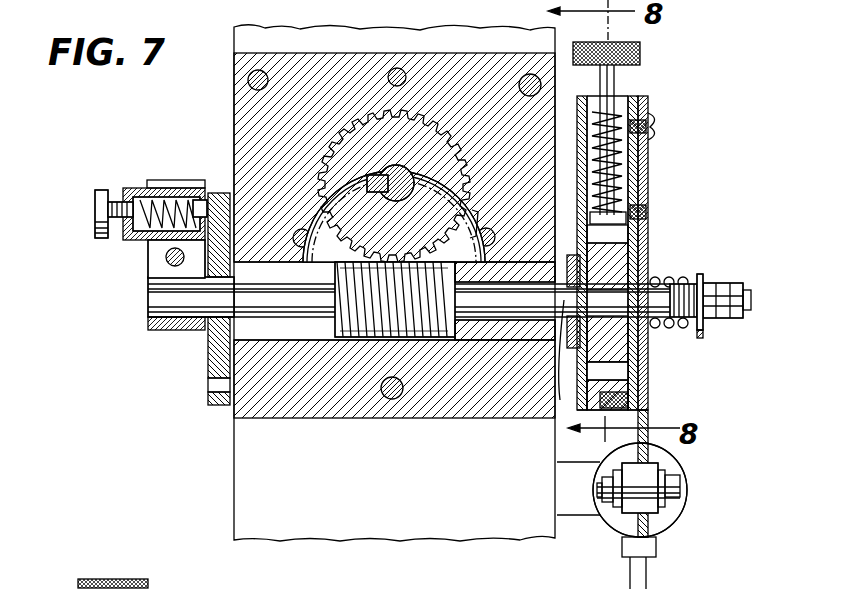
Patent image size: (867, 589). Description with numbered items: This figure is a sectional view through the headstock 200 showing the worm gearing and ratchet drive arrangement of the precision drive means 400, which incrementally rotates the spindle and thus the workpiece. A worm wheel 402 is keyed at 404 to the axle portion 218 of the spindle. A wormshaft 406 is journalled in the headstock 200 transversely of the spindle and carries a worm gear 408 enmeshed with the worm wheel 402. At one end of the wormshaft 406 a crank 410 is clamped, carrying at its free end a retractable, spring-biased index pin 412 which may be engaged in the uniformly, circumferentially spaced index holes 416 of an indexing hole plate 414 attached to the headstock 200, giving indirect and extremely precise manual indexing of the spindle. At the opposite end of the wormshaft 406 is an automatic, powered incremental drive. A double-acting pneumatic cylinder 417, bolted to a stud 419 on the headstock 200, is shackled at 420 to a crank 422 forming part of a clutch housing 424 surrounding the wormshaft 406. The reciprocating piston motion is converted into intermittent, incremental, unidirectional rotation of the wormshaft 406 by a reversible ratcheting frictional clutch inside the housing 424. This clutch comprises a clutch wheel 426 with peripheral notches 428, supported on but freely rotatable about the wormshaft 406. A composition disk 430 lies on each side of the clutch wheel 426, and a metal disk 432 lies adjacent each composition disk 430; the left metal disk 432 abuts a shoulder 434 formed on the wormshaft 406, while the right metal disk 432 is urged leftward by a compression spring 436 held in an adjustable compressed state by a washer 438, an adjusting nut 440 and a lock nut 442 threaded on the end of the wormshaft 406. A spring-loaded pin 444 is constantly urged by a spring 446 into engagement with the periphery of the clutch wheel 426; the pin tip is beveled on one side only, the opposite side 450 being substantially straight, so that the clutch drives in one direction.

The headstock 200 is at (222, 454).
The axle portion 218 is at (395, 165).
The precision drive means 400 is at (142, 166).
The worm wheel 402 is at (452, 158).
The key 404 is at (368, 262).
The wormshaft 406 is at (147, 300).
The worm gear 408 is at (356, 340).
The crank 410 is at (175, 331).
The index pin 412 is at (94, 207).
The indexing hole plate 414 is at (208, 408).
The index holes 416 is at (213, 193).
The double-acting pneumatic cylinder 417 is at (680, 523).
The stud 419 is at (580, 516).
The shackle 420 is at (684, 491).
The crank 422 is at (648, 378).
The clutch housing 424 is at (650, 184).
The clutch wheel 426 is at (628, 340).
The peripheral notches 428 is at (562, 400).
The composition disk 430 is at (553, 262).
The metal disk 432 is at (567, 345).
The shoulder 434 is at (555, 300).
The compression spring 436 is at (690, 282).
The washer 438 is at (703, 334).
The adjusting nut 440 is at (705, 322).
The lock nut 442 is at (745, 292).
The spring-loaded pin 444 is at (620, 86).
The spring 446 is at (648, 150).
The straight side 450 is at (648, 210).